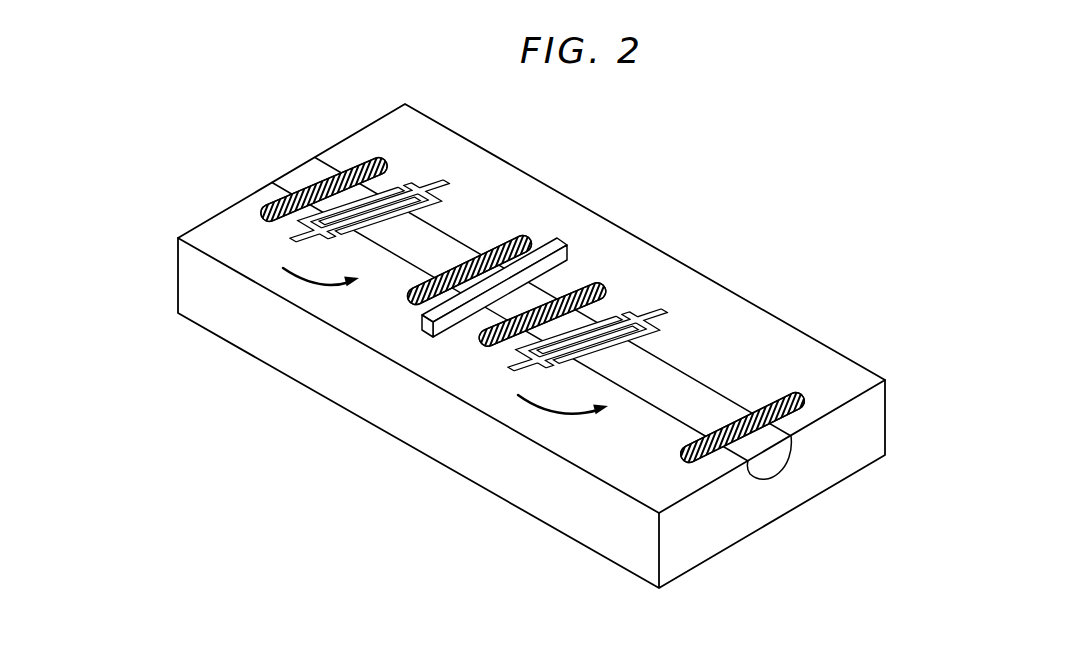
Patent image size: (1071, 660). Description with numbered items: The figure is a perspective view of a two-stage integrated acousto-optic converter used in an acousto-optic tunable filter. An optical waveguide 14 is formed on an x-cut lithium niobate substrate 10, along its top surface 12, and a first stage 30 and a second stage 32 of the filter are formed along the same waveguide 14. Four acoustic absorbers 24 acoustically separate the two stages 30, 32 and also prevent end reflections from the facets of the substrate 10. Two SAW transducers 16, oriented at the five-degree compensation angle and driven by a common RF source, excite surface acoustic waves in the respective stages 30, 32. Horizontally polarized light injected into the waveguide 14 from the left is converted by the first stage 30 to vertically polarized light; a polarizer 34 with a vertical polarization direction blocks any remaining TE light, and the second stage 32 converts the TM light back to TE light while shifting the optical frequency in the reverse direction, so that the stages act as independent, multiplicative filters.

The substrate 10 is at (290, 347).
The top surface of substrate 12 is at (713, 300).
The optical waveguide 14 is at (455, 247).
The SAW transducer 16 is at (420, 188).
The acoustic absorber 24 is at (352, 168).
The first stage 30 is at (308, 269).
The second stage 32 is at (550, 398).
The polarizer 34 is at (556, 236).